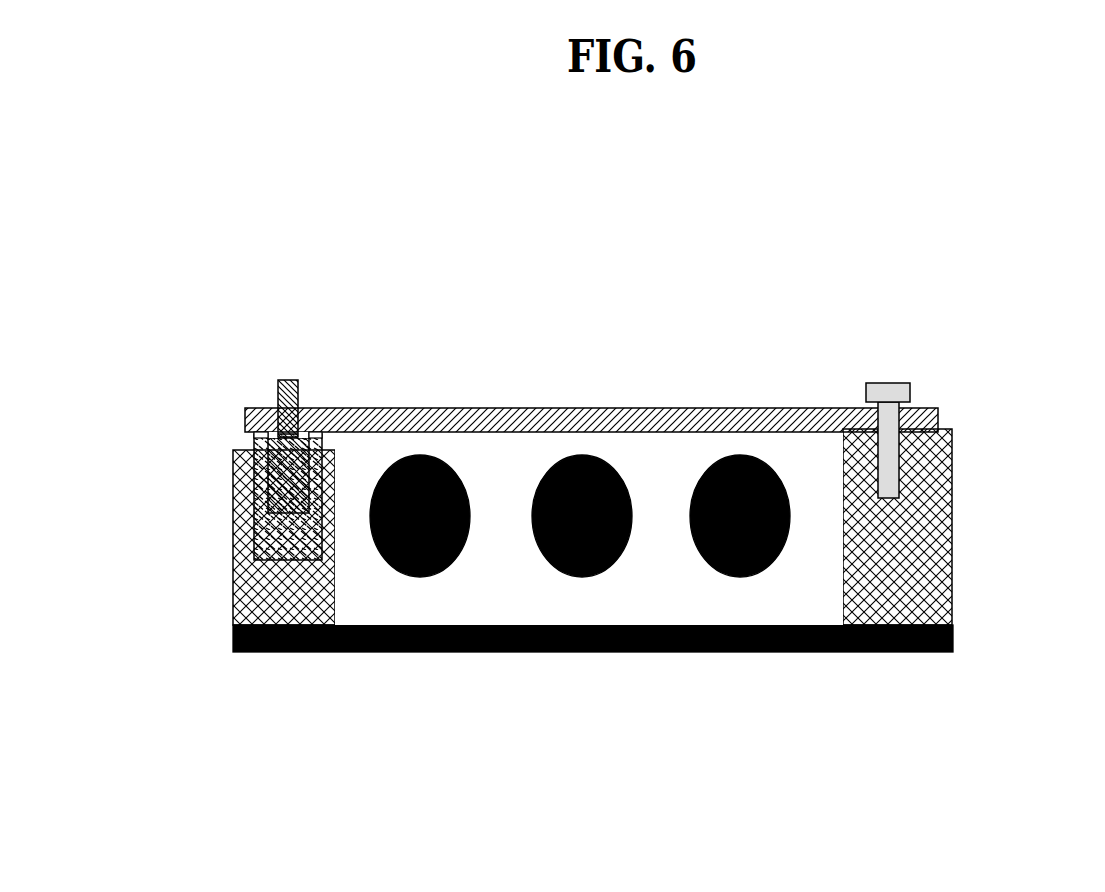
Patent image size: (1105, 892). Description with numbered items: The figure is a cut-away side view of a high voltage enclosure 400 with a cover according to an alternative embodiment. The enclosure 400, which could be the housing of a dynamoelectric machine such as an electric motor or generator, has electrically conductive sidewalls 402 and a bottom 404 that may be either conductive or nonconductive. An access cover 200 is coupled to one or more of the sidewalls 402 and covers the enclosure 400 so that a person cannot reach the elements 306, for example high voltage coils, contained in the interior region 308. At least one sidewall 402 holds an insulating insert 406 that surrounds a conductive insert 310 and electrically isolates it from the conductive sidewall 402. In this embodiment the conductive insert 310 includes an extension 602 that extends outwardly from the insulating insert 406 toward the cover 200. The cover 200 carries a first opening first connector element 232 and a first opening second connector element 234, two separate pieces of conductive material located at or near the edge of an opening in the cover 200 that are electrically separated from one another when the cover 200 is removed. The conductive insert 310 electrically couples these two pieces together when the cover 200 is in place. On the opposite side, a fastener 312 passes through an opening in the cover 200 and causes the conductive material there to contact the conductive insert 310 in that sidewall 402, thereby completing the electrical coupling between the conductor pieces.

The enclosure 400 is at (886, 270).
The access cover 200 is at (448, 432).
The first opening second connector element 234 is at (273, 430).
The extension 602 is at (290, 380).
The first opening first connector element 232 is at (310, 430).
The elements 306 is at (457, 473).
The fastener 312 is at (890, 390).
The conductive insert 310 is at (273, 503).
The insulating insert 406 is at (272, 527).
The sidewalls 402 is at (245, 577).
The interior region 308 is at (497, 575).
The bottom 404 is at (667, 650).